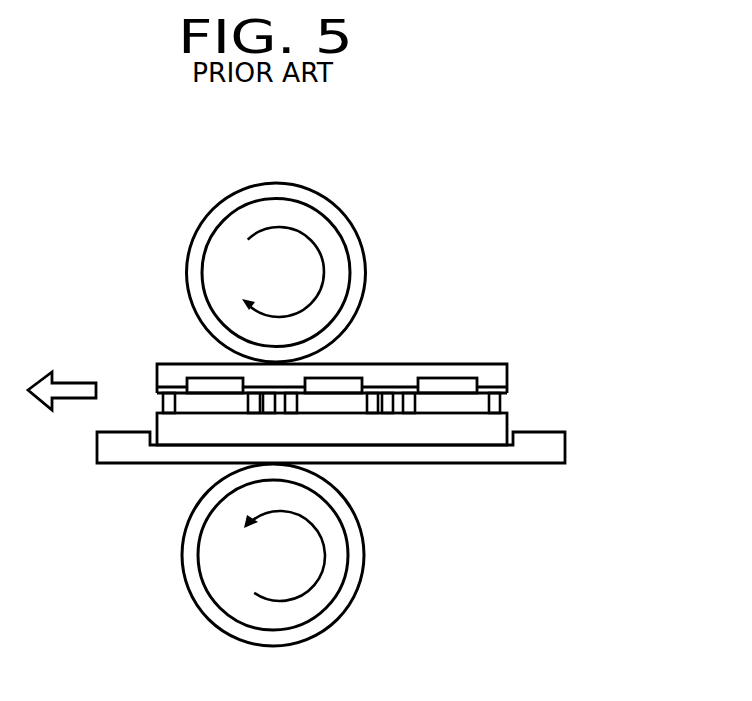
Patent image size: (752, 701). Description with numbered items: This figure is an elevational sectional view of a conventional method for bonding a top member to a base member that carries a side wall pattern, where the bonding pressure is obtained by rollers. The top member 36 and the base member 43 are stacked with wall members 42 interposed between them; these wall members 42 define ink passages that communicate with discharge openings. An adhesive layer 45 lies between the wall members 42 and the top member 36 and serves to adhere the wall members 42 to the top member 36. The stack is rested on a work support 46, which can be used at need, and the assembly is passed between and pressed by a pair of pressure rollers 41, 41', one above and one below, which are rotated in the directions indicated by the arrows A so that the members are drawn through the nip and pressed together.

The top member 36 is at (495, 373).
The adhesive layer 45 is at (495, 388).
The wall members 42 is at (493, 407).
The base member 43 is at (493, 428).
The work support 46 is at (552, 455).
The pressure roller 41 is at (300, 272).
The pressure roller 41' is at (310, 555).